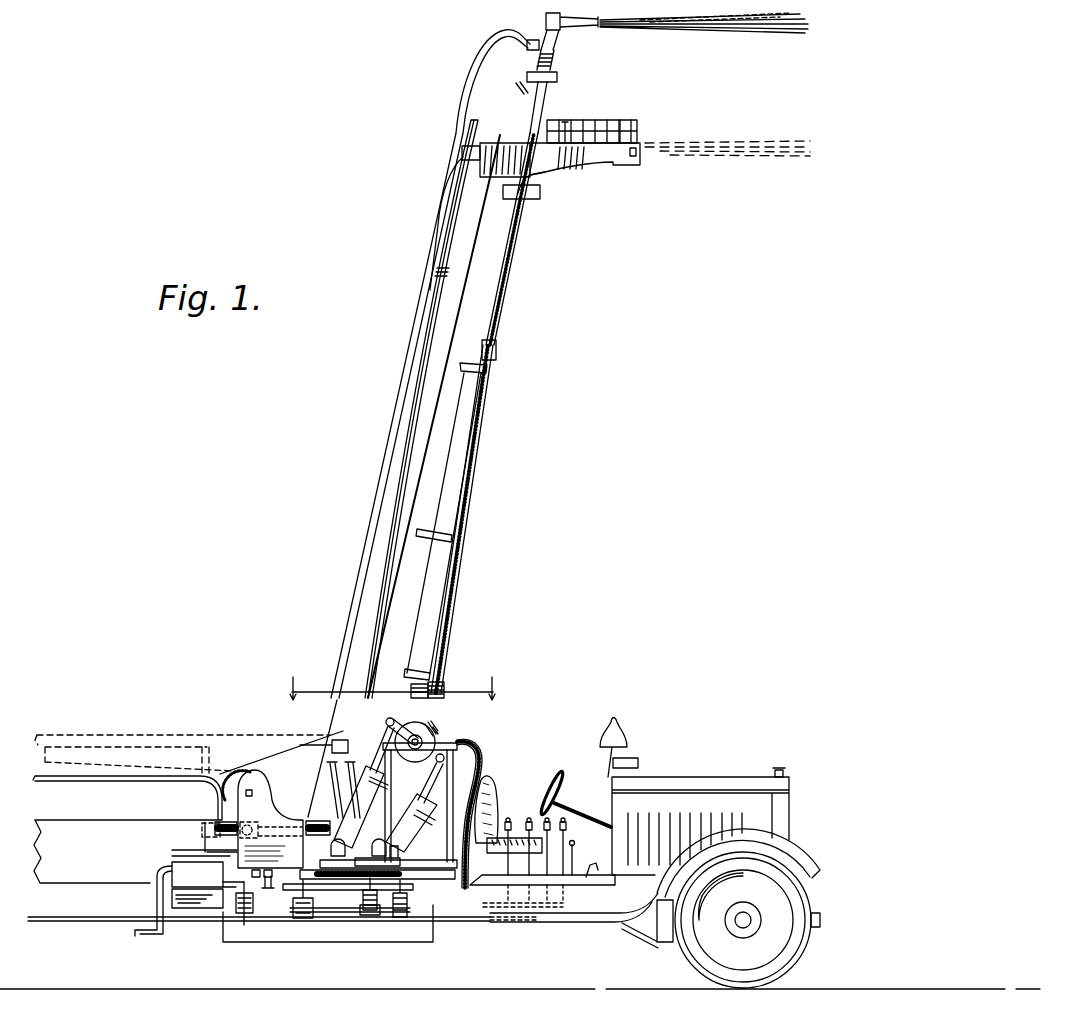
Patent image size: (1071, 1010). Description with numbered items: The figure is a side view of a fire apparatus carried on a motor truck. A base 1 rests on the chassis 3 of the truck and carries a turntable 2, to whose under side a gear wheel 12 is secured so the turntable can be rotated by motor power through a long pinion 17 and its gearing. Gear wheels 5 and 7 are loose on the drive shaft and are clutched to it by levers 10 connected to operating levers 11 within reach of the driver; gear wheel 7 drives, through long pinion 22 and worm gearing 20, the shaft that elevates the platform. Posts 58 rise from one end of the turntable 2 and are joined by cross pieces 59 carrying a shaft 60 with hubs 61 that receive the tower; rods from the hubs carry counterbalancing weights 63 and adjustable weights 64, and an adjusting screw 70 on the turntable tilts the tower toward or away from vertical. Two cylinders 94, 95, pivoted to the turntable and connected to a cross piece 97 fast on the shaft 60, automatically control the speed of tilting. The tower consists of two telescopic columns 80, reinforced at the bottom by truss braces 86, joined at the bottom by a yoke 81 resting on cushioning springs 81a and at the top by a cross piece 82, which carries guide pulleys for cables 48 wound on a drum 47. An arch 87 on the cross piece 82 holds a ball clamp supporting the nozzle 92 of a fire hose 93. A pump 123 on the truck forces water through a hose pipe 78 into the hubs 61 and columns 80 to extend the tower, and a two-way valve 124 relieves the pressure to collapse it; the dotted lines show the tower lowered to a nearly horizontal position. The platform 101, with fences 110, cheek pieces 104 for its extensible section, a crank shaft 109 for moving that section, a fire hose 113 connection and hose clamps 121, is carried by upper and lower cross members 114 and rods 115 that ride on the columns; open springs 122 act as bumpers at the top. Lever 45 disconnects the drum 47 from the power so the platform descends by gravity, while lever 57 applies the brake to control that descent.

The base 1 is at (440, 919).
The turntable 2 is at (420, 870).
The chassis 3 is at (596, 921).
The gear wheel 5 is at (245, 926).
The gear wheel 7 is at (340, 915).
The lever 10 is at (396, 918).
The operating lever 11 is at (527, 822).
The gear wheel 12 is at (402, 882).
The long pinion 17 is at (303, 899).
The worm gearing 20 is at (368, 918).
The long pinion 22 is at (355, 893).
The lever 45 is at (331, 790).
The drum 47 is at (250, 773).
The cables 48 is at (382, 628).
The lever 57 is at (331, 751).
The posts 58 is at (446, 760).
The cross pieces 59 is at (336, 733).
The shaft 60 is at (386, 720).
The hubs 61 is at (433, 728).
The weights 63 is at (470, 852).
The weights 64 is at (415, 815).
The adjusting screw 70 is at (239, 816).
The hose pipe 78 is at (484, 752).
The columns 80 is at (146, 732).
The yoke 81 is at (442, 696).
The springs 81a is at (412, 700).
The cross piece 82 is at (500, 32).
The truss brace 86 is at (429, 488).
The arch 87 is at (563, 27).
The nozzle 92 is at (600, 25).
The fire hose 93 is at (396, 443).
The cylinder 94 is at (340, 812).
The cylinder 95 is at (385, 853).
The cross piece 97 is at (446, 736).
The platform 101 is at (645, 145).
The cheek pieces 104 is at (553, 170).
The crank shaft 109 is at (565, 122).
The fence 110 is at (620, 120).
The fire hose 113 is at (403, 369).
The cross members 114 is at (560, 78).
The rods 115 is at (528, 90).
The hose clamps 121 is at (478, 150).
The open springs 122 is at (553, 63).
The pump 123 is at (184, 862).
The two-way valve 124 is at (268, 889).